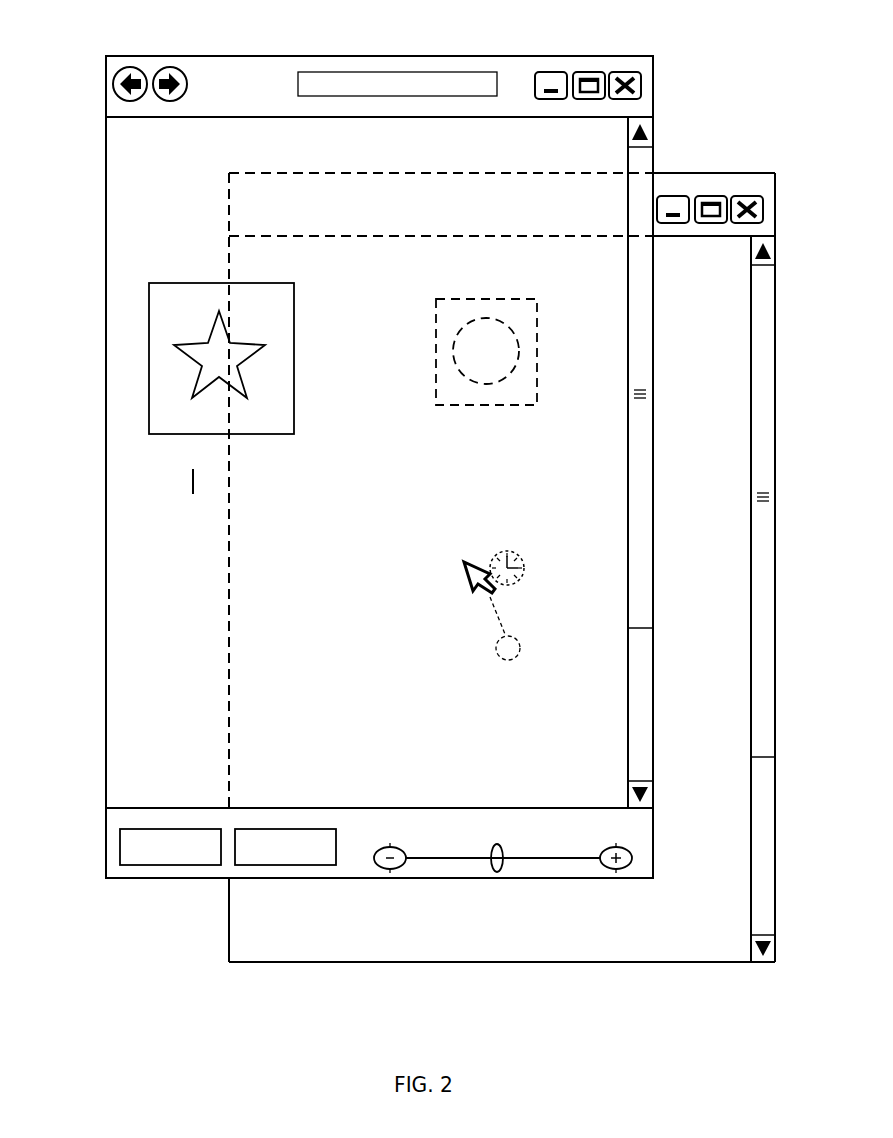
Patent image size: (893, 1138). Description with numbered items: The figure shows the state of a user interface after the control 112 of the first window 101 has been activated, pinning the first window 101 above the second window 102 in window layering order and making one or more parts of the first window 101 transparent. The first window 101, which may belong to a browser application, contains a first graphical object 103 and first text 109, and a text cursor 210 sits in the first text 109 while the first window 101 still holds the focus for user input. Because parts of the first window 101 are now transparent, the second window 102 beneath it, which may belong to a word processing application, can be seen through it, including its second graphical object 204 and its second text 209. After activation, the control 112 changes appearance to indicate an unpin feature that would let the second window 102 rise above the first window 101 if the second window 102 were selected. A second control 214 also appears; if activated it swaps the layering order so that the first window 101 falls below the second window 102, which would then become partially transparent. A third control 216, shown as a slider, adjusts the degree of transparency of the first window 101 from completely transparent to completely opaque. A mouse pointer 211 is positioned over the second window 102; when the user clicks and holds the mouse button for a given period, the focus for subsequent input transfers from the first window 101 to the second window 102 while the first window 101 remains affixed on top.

The first window 101 is at (215, 55).
The second window 102 is at (722, 172).
The first graphical object 103 is at (160, 282).
The first text 109 is at (139, 486).
The control 112 is at (155, 866).
The second graphical object 204 is at (454, 298).
The second text 209 is at (306, 717).
The text cursor 210 is at (194, 496).
The mouse pointer 211 is at (470, 560).
The second control 214 is at (273, 866).
The third control 216 is at (436, 860).